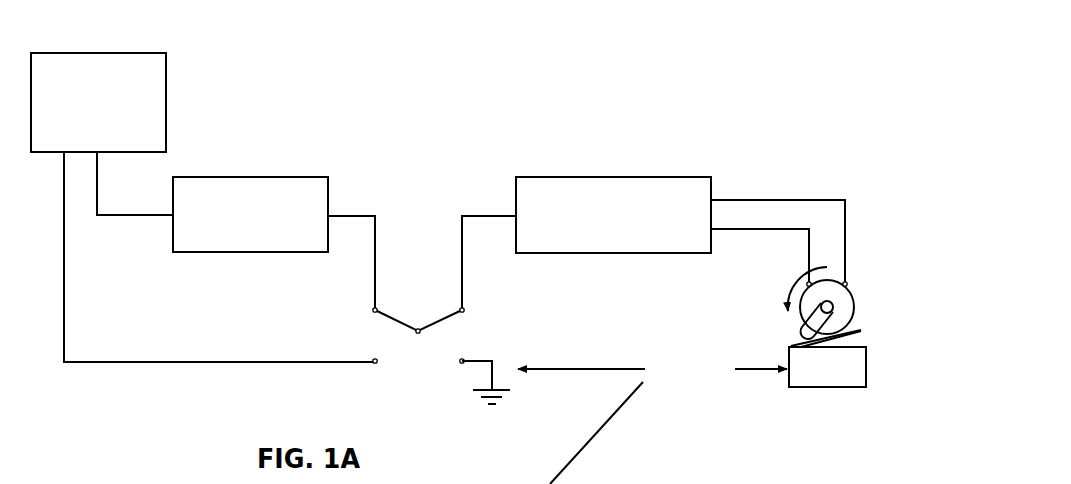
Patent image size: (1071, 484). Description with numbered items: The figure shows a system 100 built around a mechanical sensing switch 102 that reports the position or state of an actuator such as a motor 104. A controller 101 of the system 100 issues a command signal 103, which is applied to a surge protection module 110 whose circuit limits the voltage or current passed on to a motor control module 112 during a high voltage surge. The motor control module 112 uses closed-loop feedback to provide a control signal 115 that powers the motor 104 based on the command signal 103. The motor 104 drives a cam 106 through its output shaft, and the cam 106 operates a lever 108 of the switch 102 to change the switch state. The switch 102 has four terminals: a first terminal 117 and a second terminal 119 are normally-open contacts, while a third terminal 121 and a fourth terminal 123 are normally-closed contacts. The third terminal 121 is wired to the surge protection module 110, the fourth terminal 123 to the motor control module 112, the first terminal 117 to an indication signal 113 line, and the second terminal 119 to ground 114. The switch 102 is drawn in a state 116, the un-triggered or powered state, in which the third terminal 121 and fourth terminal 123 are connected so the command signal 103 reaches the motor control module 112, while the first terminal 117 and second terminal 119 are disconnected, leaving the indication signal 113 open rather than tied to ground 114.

The system 100 is at (212, 78).
The controller 101 is at (118, 128).
The switch 102 is at (827, 388).
The command signal 103 is at (130, 218).
The motor 104 is at (856, 290).
The cam 106 is at (797, 327).
The lever 108 is at (864, 338).
The surge protection module 110 is at (250, 177).
The motor control module 112 is at (615, 177).
The indication signal 113 is at (113, 357).
The ground 114 is at (512, 390).
The control signal 115 is at (750, 200).
The state 116 is at (417, 300).
The first terminal 117 is at (375, 353).
The second terminal 119 is at (463, 354).
The third terminal 121 is at (379, 307).
The fourth terminal 123 is at (455, 305).